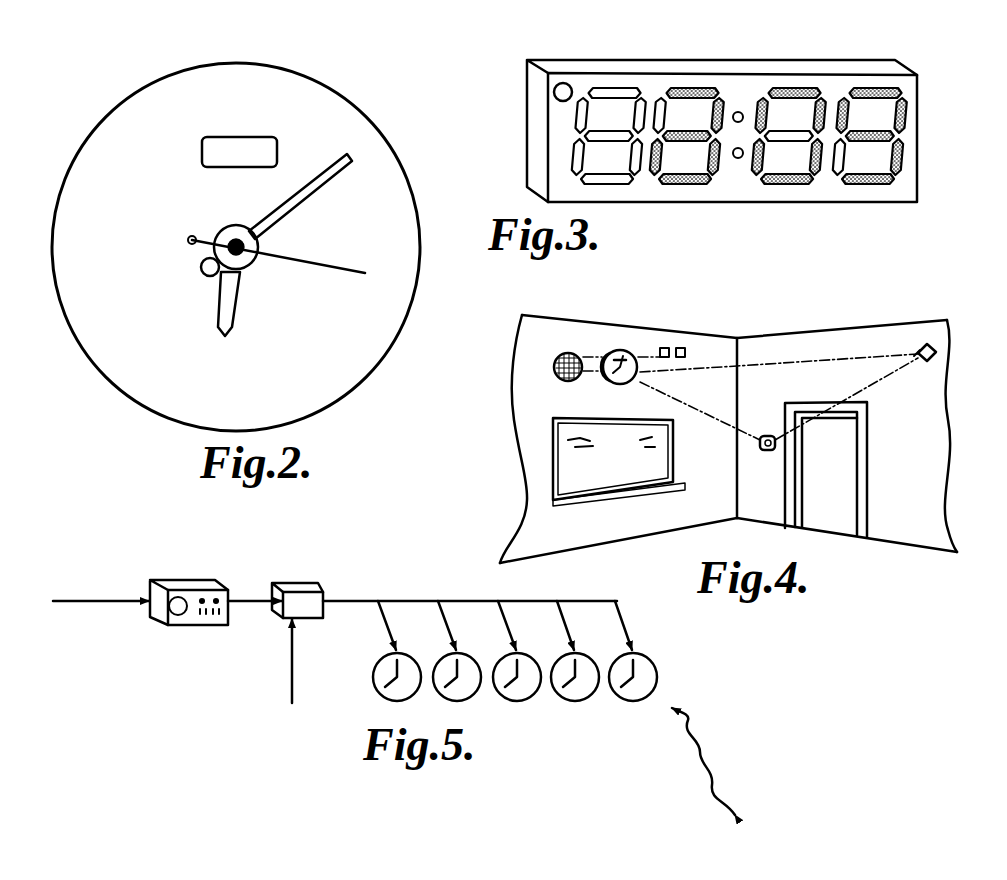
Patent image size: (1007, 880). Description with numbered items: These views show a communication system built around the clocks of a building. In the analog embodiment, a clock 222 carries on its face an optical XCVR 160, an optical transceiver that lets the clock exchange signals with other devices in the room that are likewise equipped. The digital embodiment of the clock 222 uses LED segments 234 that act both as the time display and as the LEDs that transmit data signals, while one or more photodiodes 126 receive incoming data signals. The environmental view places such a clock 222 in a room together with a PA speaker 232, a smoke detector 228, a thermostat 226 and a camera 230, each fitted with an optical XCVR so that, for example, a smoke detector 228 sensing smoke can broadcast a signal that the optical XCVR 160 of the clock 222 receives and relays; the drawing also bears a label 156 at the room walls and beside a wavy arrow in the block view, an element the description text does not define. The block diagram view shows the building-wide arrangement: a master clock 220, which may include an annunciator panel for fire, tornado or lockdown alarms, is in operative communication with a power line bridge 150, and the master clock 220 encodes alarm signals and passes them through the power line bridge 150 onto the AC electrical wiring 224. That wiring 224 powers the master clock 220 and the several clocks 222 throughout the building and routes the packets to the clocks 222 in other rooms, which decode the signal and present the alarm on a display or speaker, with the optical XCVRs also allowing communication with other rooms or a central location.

In FIG. 2, the clock 222 is at (122, 93).
In FIG. 3, the clock 222 is at (514, 133).
In FIG. 4, the clock 222 is at (621, 358).
In FIG. 5, the clock 222 is at (373, 668).
In FIG. 2, the optical XCVR 160 is at (273, 138).
In FIG. 4, the optical XCVR 160 is at (630, 358).
In FIG. 3, the photodiode 126 is at (565, 83).
In FIG. 3, the LED segments 234 is at (682, 188).
In FIG. 4, the PA speaker 232 is at (568, 351).
In FIG. 4, the smoke detector 228 is at (680, 348).
In FIG. 4, the thermostat 226 is at (764, 435).
In FIG. 4, the camera 230 is at (923, 343).
In FIG. 4, the wireless communication link 156 is at (945, 440).
In FIG. 5, the wireless communication link 156 is at (704, 735).
In FIG. 5, the AC electrical wiring 224 is at (84, 603).
In FIG. 5, the master clock 220 is at (178, 580).
In FIG. 5, the power line bridge 150 is at (306, 582).